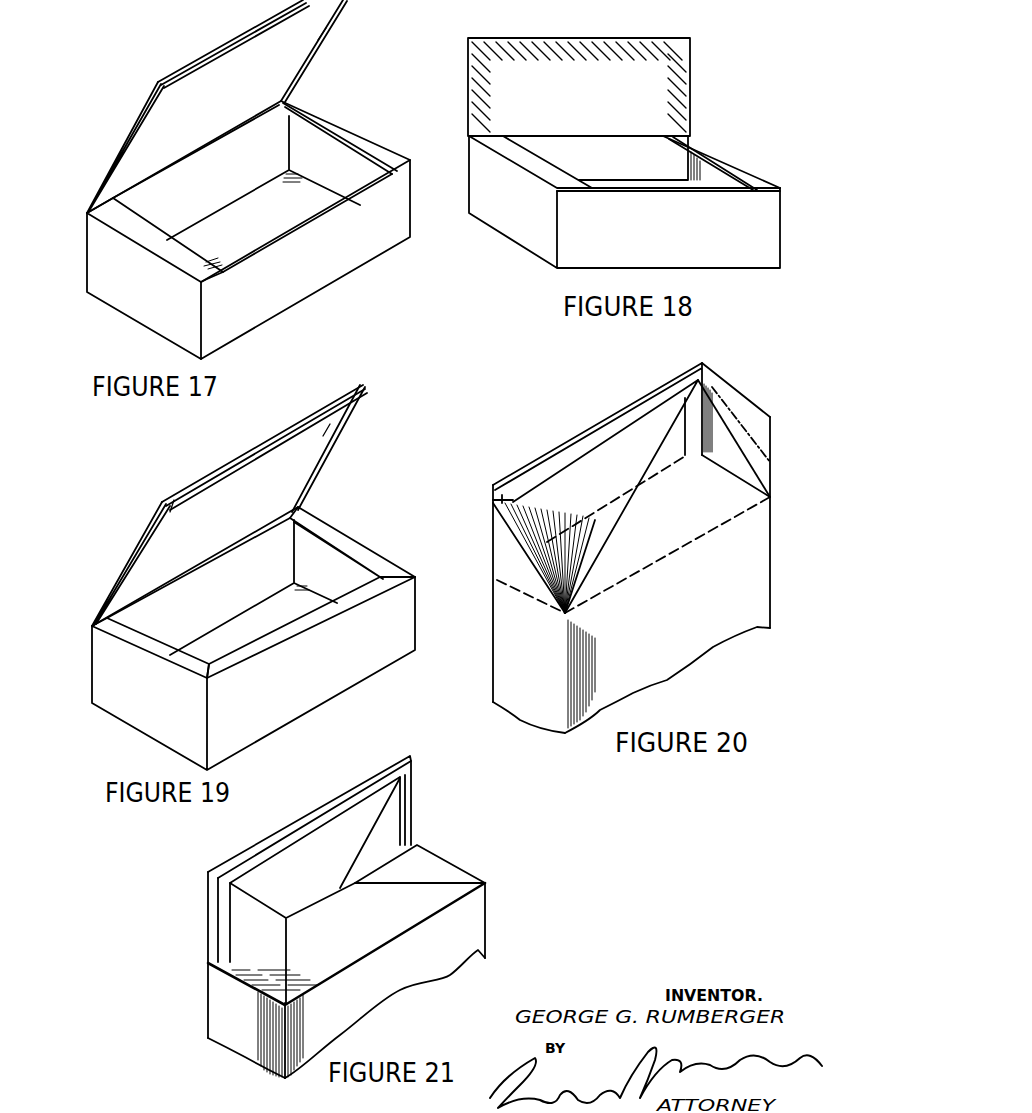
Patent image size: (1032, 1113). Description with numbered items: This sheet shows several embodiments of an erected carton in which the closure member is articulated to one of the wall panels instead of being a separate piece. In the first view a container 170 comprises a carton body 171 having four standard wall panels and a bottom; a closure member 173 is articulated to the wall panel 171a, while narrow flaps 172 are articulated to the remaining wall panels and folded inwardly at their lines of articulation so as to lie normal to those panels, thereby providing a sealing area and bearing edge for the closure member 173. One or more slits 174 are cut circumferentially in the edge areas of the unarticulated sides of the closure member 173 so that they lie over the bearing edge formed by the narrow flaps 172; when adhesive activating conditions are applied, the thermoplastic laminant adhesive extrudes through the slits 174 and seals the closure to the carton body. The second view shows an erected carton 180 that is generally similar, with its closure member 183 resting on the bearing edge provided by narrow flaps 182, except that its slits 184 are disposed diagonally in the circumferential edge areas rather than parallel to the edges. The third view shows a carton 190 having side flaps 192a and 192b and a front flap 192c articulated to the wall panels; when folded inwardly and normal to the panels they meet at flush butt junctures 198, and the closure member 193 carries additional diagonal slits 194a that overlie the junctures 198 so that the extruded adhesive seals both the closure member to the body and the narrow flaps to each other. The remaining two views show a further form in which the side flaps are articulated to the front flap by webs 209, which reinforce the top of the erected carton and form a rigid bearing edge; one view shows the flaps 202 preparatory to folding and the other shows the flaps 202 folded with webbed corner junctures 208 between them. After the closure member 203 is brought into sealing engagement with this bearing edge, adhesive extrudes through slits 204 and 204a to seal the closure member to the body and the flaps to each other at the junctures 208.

In FIG. 17, the container 170 is at (352, 104).
In FIG. 17, the carton body 171 is at (98, 257).
In FIG. 17, the wall panel 171a is at (222, 184).
In FIG. 17, the narrow flaps 172 is at (347, 182).
In FIG. 17, the closure member 173 is at (130, 130).
In FIG. 17, the slits 174 is at (319, 34).
In FIG. 18, the erected carton 180 is at (718, 148).
In FIG. 18, the narrow flaps 182 is at (632, 185).
In FIG. 18, the closure member 183 is at (692, 80).
In FIG. 18, the slits 184 is at (622, 10).
In FIG. 19, the carton 190 is at (339, 518).
In FIG. 19, the side flap 192a is at (135, 643).
In FIG. 19, the side flap 192b is at (365, 557).
In FIG. 19, the front flap 192c is at (368, 601).
In FIG. 19, the closure member 193 is at (142, 532).
In FIG. 19, the diagonal slits 194a is at (173, 516).
In FIG. 19, the junctures 198 is at (390, 575).
In FIG. 20, the flaps 202 is at (707, 382).
In FIG. 21, the flaps 202 is at (240, 958).
In FIG. 20, the closure member 203 is at (633, 400).
In FIG. 21, the closure member 203 is at (417, 768).
In FIG. 21, the slits 204 is at (340, 815).
In FIG. 21, the slits 204a is at (358, 852).
In FIG. 21, the webbed corner junctures 208 is at (370, 890).
In FIG. 20, the webs 209 is at (617, 517).